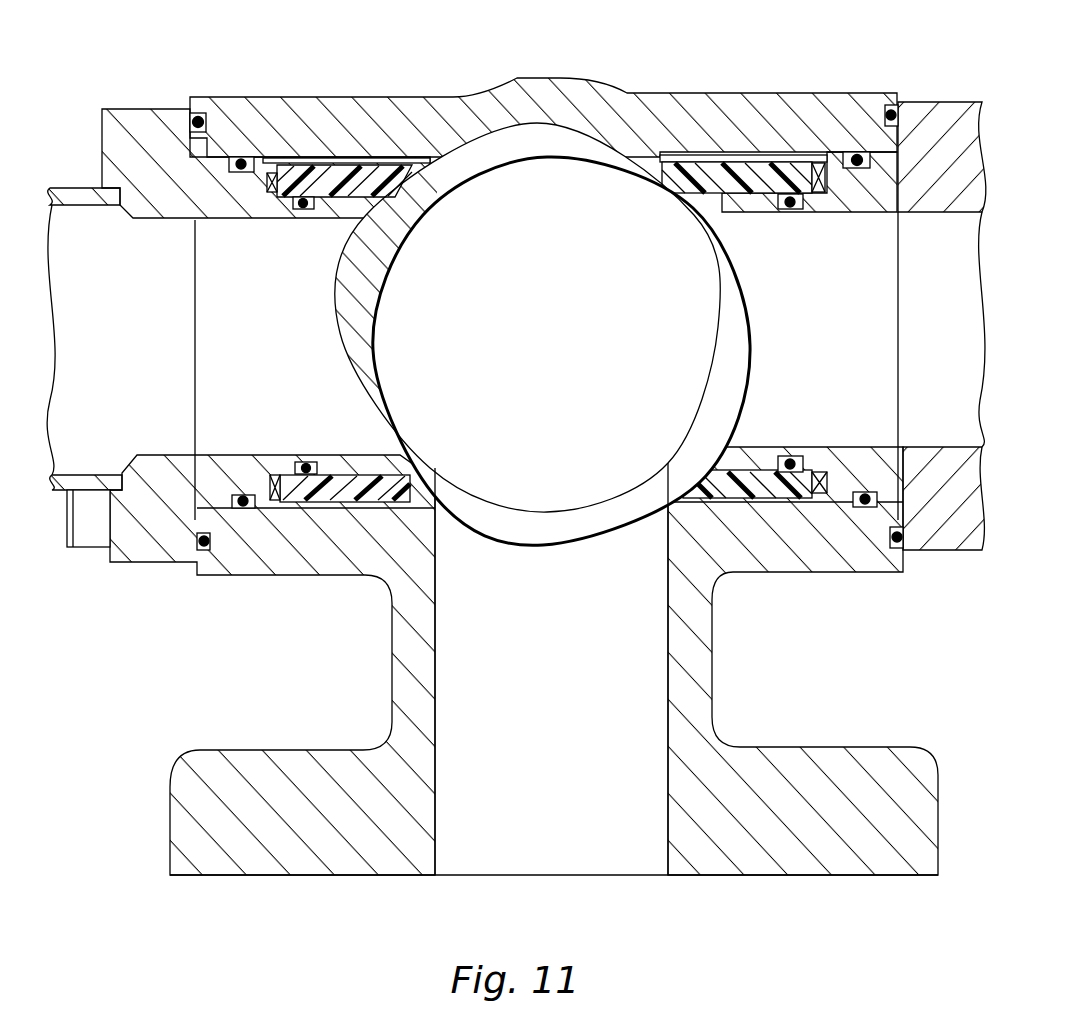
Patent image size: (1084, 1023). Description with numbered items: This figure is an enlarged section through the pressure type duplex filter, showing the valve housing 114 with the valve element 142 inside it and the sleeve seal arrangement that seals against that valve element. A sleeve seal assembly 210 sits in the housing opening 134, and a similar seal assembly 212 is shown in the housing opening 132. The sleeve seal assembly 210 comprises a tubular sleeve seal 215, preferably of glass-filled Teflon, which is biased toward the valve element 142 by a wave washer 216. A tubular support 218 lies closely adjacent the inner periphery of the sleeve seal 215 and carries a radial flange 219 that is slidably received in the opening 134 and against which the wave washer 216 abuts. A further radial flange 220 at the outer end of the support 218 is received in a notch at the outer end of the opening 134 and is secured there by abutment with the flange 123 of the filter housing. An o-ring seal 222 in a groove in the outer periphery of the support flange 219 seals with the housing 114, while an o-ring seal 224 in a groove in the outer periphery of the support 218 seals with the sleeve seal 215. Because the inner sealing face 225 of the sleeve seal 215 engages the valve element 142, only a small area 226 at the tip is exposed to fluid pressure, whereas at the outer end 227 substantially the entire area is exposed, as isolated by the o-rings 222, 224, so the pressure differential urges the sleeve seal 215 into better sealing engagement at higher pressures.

The valve housing 114 is at (723, 90).
The flange of filter housing 123 is at (928, 100).
The housing opening 132 is at (210, 168).
The housing opening 134 is at (880, 160).
The valve element 142 is at (573, 148).
The sleeve seal assembly 210 is at (828, 213).
The seal assembly 212 is at (215, 220).
The tubular sleeve seal 215 is at (750, 158).
The wave washer 216 is at (820, 160).
The tubular support 218 is at (792, 217).
The radial flange 219 is at (888, 198).
The radial flange 220 is at (903, 512).
The o-ring seal 222 is at (863, 507).
The o-ring seal 224 is at (788, 460).
The inner sealing face 225 is at (683, 188).
The small area 226 is at (653, 156).
The outer end 227 is at (818, 472).